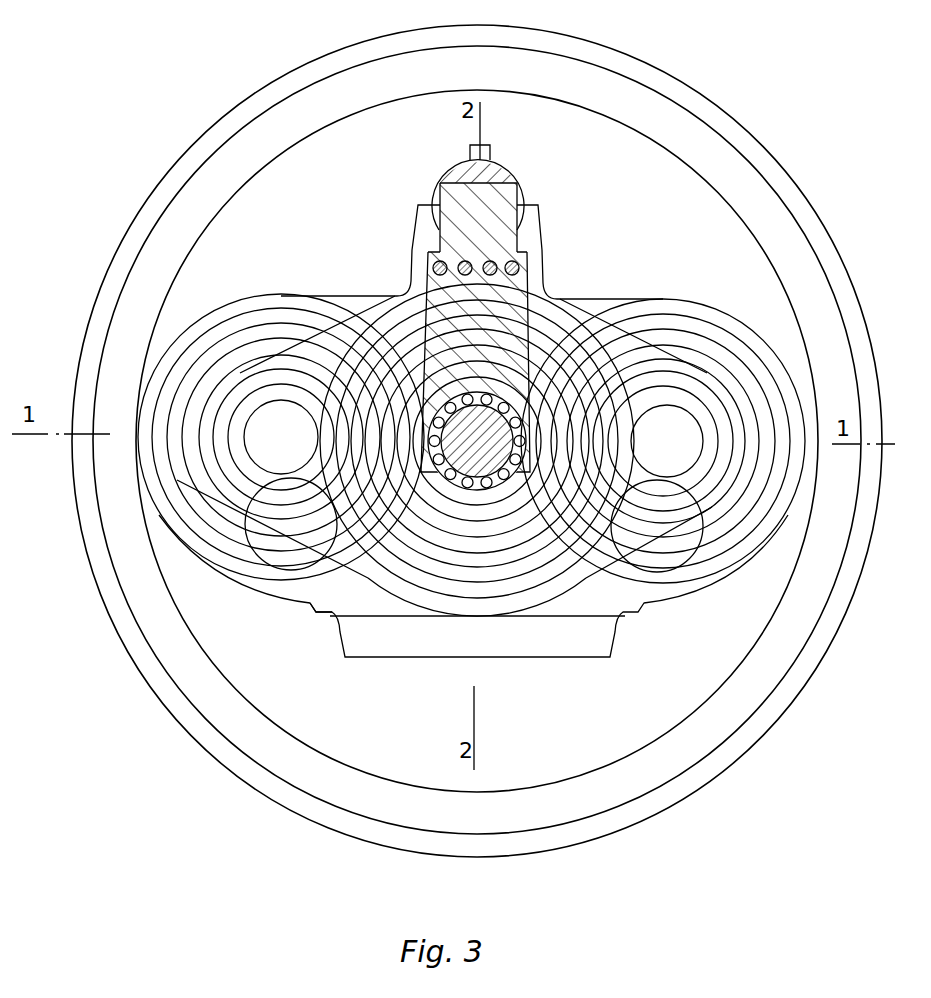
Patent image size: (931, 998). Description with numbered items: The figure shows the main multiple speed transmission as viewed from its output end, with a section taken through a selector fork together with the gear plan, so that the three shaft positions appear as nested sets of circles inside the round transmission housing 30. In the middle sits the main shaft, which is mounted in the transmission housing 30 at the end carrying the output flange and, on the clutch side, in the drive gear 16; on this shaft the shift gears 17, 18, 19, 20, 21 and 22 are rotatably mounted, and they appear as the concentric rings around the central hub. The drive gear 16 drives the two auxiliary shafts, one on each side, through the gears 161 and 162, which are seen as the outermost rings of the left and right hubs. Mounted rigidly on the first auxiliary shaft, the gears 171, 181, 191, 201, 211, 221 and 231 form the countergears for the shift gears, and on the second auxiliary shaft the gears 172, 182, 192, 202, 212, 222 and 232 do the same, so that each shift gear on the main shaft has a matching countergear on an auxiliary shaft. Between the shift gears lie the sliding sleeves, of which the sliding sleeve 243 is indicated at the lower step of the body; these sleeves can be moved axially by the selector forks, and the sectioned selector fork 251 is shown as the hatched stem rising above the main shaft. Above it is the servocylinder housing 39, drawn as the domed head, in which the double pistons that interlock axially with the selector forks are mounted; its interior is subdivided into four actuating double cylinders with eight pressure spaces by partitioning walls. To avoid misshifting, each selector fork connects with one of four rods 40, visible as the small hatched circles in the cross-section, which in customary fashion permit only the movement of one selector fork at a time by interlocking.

The transmission housing 30 is at (563, 77).
The servocylinder housing 39 is at (452, 175).
The selector fork 251 is at (455, 230).
The rods 40 is at (514, 262).
The drive gear 16 is at (518, 503).
The shift gear 17 is at (503, 520).
The shift gear 18 is at (482, 538).
The shift gear 19 is at (458, 560).
The shift gear 20 is at (438, 570).
The shift gear 21 is at (407, 570).
The shift gear 22 is at (368, 578).
The gear 161 is at (675, 312).
The countergear 171 is at (687, 330).
The countergear 181 is at (698, 348).
The countergear 191 is at (708, 365).
The countergear 201 is at (713, 392).
The countergear 211 is at (718, 420).
The countergear 221 is at (690, 470).
The countergear 231 is at (683, 555).
The gear 162 is at (252, 310).
The countergear 172 is at (232, 333).
The countergear 182 is at (222, 357).
The countergear 192 is at (220, 380).
The countergear 202 is at (218, 398).
The countergear 212 is at (230, 457).
The countergear 222 is at (240, 468).
The countergear 232 is at (250, 538).
The sliding sleeve 243 is at (318, 613).